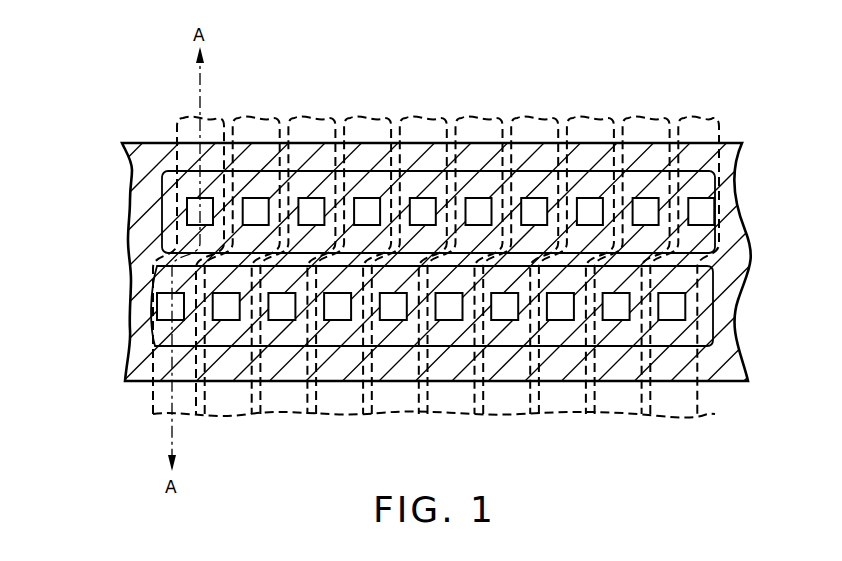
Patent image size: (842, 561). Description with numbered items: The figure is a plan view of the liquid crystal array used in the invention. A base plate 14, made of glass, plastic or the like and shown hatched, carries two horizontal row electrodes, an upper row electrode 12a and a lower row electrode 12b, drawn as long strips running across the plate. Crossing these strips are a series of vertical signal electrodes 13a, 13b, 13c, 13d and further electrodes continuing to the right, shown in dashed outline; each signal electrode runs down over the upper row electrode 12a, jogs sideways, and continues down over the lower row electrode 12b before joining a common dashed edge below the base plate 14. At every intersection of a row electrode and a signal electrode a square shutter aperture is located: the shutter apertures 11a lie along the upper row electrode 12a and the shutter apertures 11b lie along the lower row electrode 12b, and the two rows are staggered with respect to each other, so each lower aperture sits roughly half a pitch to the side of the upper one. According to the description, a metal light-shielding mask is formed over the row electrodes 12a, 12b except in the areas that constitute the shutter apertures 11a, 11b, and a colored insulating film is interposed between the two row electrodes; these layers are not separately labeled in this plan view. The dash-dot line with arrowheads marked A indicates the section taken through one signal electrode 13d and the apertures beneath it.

The shutter aperture 11a is at (188, 208).
The shutter aperture 11b is at (165, 302).
The row electrode 12a is at (707, 187).
The row electrode 12b is at (710, 313).
The signal electrode 13a is at (377, 120).
The signal electrode 13b is at (320, 115).
The signal electrode 13c is at (268, 113).
The signal electrode 13d is at (216, 120).
The base plate 14 is at (742, 362).